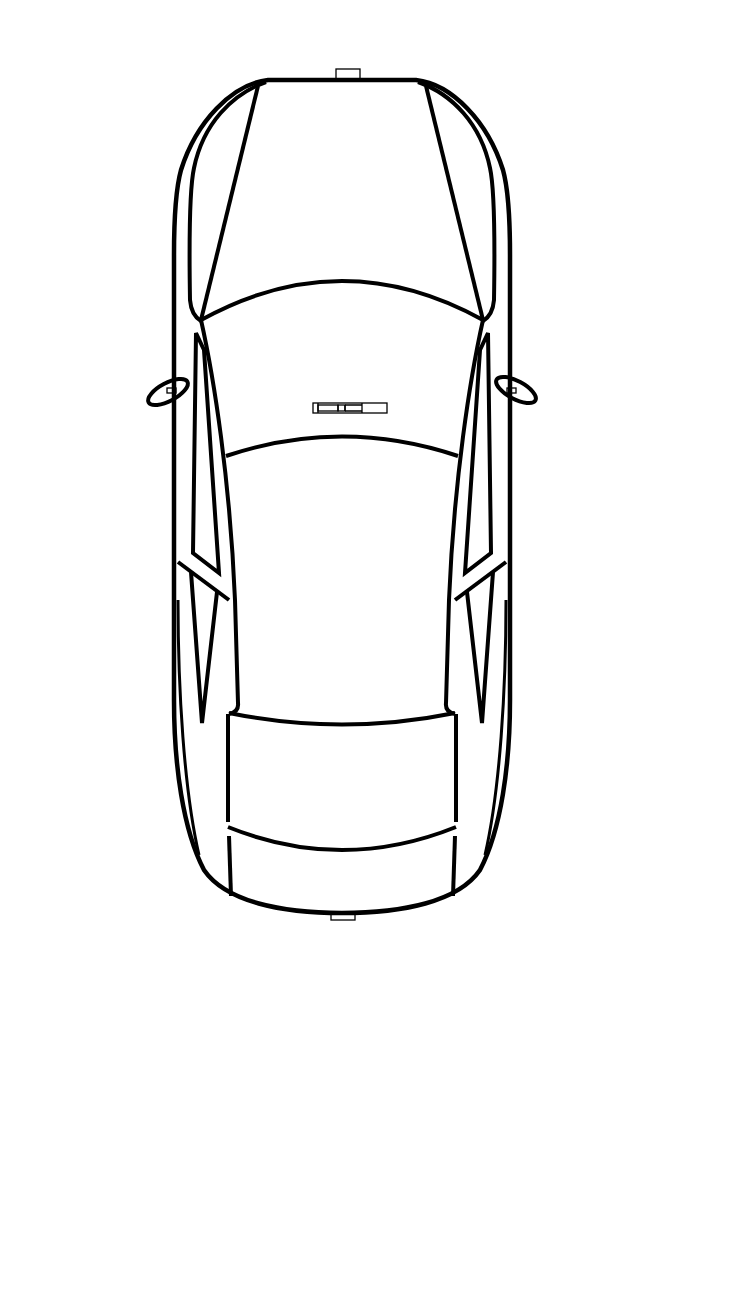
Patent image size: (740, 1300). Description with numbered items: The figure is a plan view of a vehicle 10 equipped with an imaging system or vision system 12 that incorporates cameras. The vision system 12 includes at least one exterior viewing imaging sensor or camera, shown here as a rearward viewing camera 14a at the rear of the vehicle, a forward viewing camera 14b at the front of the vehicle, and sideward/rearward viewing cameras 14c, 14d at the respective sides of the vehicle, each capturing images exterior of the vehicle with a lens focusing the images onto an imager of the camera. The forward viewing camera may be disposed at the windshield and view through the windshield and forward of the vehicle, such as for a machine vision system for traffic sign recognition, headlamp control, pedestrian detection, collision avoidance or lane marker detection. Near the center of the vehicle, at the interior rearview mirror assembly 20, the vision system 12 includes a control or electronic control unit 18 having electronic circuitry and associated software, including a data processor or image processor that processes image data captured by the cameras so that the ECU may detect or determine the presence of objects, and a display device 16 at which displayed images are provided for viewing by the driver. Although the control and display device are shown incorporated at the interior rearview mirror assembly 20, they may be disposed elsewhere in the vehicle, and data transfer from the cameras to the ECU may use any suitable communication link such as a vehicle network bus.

The vehicle 10 is at (107, 87).
The vision system 12 is at (296, 932).
The rearward viewing camera 14a is at (350, 921).
The forward viewing camera 14b is at (352, 69).
The sideward/rearward viewing camera 14c is at (153, 386).
The sideward/rearward viewing camera 14d is at (530, 383).
The display device 16 is at (330, 405).
The electronic control unit (ECU) 18 is at (343, 404).
The interior rearview mirror assembly 20 is at (387, 404).